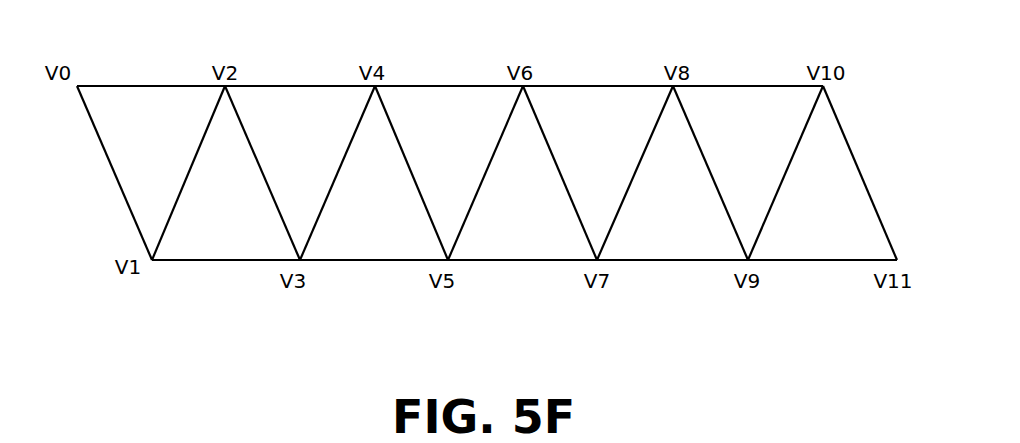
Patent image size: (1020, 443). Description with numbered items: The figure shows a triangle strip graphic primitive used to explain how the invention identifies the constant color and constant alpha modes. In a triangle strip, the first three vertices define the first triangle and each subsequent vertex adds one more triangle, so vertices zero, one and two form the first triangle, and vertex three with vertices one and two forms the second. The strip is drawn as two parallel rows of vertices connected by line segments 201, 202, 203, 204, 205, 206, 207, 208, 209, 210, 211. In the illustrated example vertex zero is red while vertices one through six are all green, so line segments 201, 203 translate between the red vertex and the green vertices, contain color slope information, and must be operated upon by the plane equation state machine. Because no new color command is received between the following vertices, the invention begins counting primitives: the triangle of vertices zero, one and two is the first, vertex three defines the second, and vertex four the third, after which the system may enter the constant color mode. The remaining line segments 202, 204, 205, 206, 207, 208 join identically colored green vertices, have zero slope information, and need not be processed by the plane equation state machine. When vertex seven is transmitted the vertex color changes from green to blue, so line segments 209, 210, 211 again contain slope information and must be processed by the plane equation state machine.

The line segment 201 is at (111, 165).
The line segment 202 is at (208, 127).
The line segment 203 is at (153, 86).
The line segment 204 is at (212, 260).
The line segment 205 is at (263, 175).
The line segment 206 is at (386, 260).
The line segment 207 is at (356, 128).
The line segment 208 is at (307, 86).
The line segment 209 is at (516, 260).
The line segment 210 is at (564, 183).
The line segment 211 is at (595, 86).